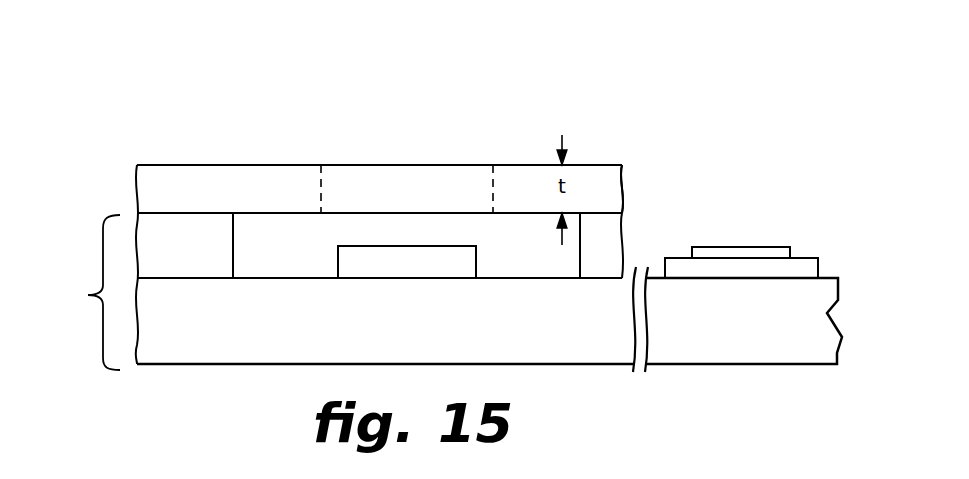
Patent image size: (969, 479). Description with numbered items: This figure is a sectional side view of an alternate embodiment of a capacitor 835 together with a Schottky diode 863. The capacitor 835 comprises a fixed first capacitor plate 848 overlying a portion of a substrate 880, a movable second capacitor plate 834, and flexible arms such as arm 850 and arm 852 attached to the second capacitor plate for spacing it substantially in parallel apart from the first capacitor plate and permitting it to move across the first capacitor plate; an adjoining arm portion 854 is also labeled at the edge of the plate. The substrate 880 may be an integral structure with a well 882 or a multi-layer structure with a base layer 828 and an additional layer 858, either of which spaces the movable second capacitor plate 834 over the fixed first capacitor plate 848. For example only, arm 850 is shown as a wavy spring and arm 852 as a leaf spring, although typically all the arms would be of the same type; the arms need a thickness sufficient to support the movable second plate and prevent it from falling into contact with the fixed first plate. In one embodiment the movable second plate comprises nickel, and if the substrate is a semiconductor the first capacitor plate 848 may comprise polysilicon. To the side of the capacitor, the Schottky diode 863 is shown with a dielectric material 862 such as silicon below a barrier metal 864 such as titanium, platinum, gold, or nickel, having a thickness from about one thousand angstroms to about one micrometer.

The base layer 828 is at (258, 338).
The flexible arm 852 is at (213, 206).
The movable second capacitor plate 834 is at (375, 201).
The flexible arm 850 is at (505, 177).
The layer end portion 854 is at (600, 178).
The additional layer 858 is at (163, 255).
The well 882 is at (253, 255).
The fixed first capacitor plate 848 is at (368, 268).
The capacitor 835 is at (495, 218).
The dielectric material 862 is at (800, 263).
The barrier metal 864 is at (735, 250).
The Schottky diode 863 is at (682, 250).
The substrate 880 is at (74, 292).